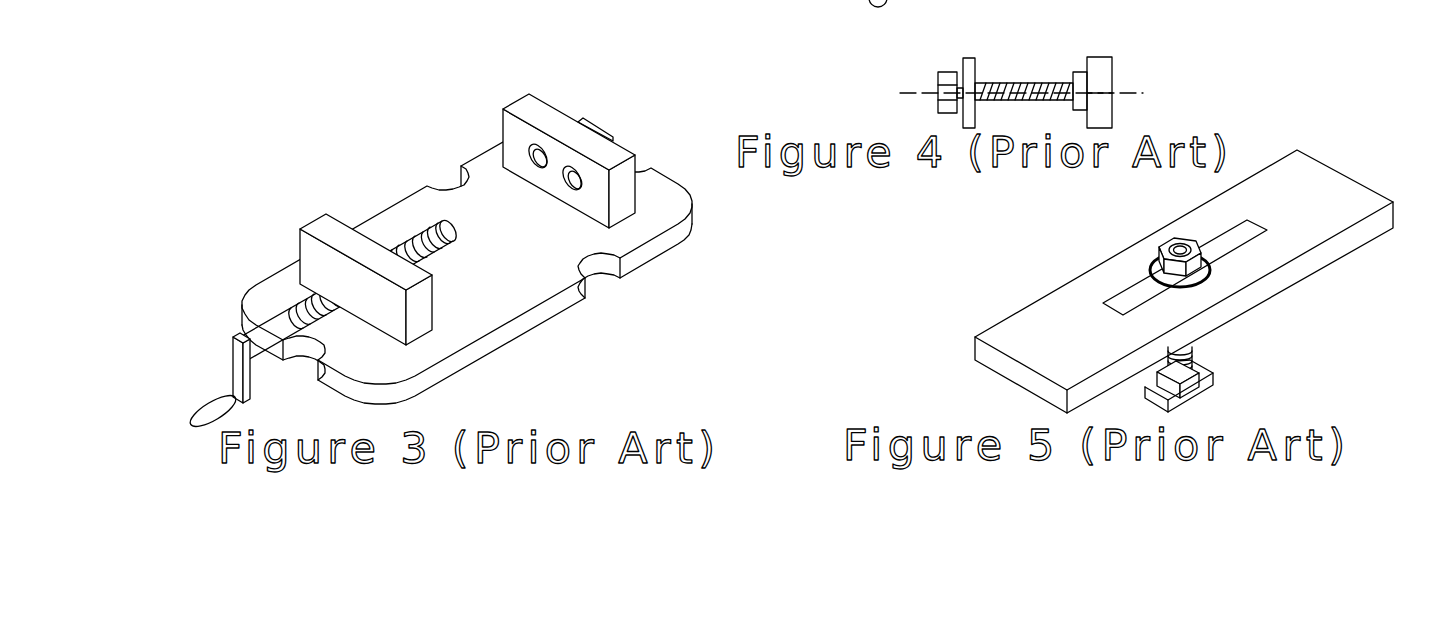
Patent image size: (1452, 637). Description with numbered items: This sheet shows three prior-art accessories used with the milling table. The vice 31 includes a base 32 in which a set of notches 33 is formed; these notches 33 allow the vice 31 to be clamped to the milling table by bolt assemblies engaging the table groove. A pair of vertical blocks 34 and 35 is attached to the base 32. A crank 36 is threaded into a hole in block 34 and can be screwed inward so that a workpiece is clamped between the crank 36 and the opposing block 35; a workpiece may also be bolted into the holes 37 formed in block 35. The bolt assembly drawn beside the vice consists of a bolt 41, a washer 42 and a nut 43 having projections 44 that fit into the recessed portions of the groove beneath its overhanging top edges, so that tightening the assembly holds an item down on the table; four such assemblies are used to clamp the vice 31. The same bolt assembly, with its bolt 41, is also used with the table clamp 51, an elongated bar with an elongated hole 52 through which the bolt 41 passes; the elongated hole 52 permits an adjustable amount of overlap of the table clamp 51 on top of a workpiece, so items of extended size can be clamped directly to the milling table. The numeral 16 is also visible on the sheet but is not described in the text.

In FIG. 3, the frame 16 is at (690, 15).
In FIG. 3, the vice 31 is at (439, 227).
In FIG. 3, the base 32 is at (465, 312).
In FIG. 3, the notches 33 is at (443, 183).
In FIG. 3, the vertical block 34 is at (320, 230).
In FIG. 3, the vertical block 35 is at (554, 141).
In FIG. 3, the crank 36 is at (248, 337).
In FIG. 3, the holes 37 is at (568, 186).
In FIG. 4, the bolt 41 is at (1030, 83).
In FIG. 5, the bolt 41 is at (1193, 360).
In FIG. 4, the washer 42 is at (965, 58).
In FIG. 4, the nut 43 is at (1103, 88).
In FIG. 4, the projections 44 is at (1098, 67).
In FIG. 5, the table clamp 51 is at (1107, 280).
In FIG. 5, the elongated hole 52 is at (1230, 243).